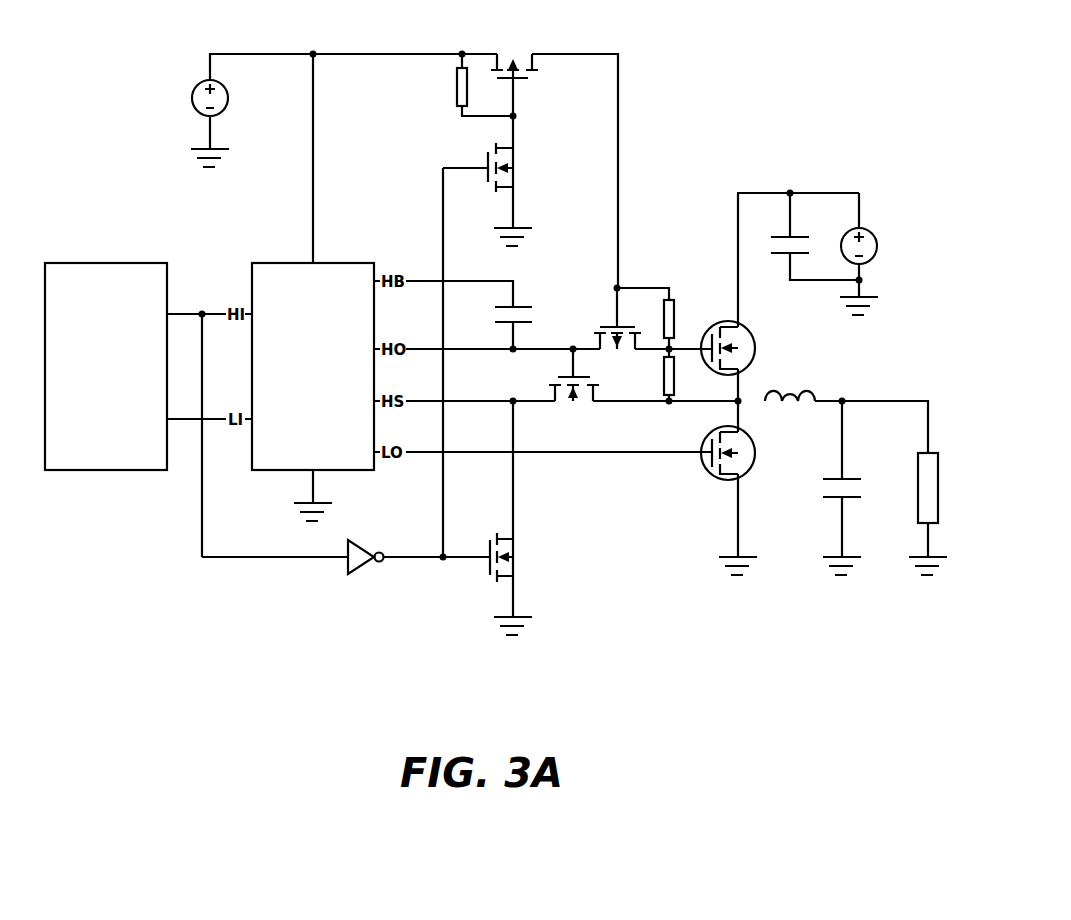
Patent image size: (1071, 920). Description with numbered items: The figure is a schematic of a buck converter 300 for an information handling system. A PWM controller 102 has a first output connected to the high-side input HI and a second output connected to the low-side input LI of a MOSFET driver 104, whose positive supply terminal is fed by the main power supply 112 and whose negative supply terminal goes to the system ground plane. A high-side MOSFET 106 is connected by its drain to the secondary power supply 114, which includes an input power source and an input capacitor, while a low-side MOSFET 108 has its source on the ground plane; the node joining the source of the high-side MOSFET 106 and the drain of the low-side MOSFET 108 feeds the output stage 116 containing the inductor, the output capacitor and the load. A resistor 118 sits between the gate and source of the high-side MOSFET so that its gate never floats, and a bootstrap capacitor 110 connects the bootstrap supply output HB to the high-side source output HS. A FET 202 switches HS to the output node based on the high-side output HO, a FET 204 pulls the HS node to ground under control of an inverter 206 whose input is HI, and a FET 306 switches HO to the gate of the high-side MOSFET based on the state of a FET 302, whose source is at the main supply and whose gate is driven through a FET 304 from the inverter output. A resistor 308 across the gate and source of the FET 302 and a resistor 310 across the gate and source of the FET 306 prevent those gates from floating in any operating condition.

The pulse-width modulation (PWM) controller 102 is at (57, 263).
The MOSFET driver 104 is at (262, 263).
The high-side MOSFET (QH) 106 is at (719, 327).
The low-side MOSFET (QL) 108 is at (708, 440).
The bootstrap capacitor (CB) 110 is at (528, 323).
The main power supply (VDD) 112 is at (181, 60).
The secondary power supply 114 is at (820, 170).
The output stage 116 is at (900, 377).
The resistor (R1) 118 is at (675, 374).
The FET (Q4) 202 is at (565, 401).
The FET (Q5) 204 is at (515, 570).
The inverter 206 is at (360, 540).
The buck converter 300 is at (115, 637).
The FET (Q1) 302 is at (508, 56).
The FET (Q2) 304 is at (513, 183).
The FET (Q3) 306 is at (612, 330).
The resistor (R2) 308 is at (458, 100).
The resistor (R3) 310 is at (674, 299).